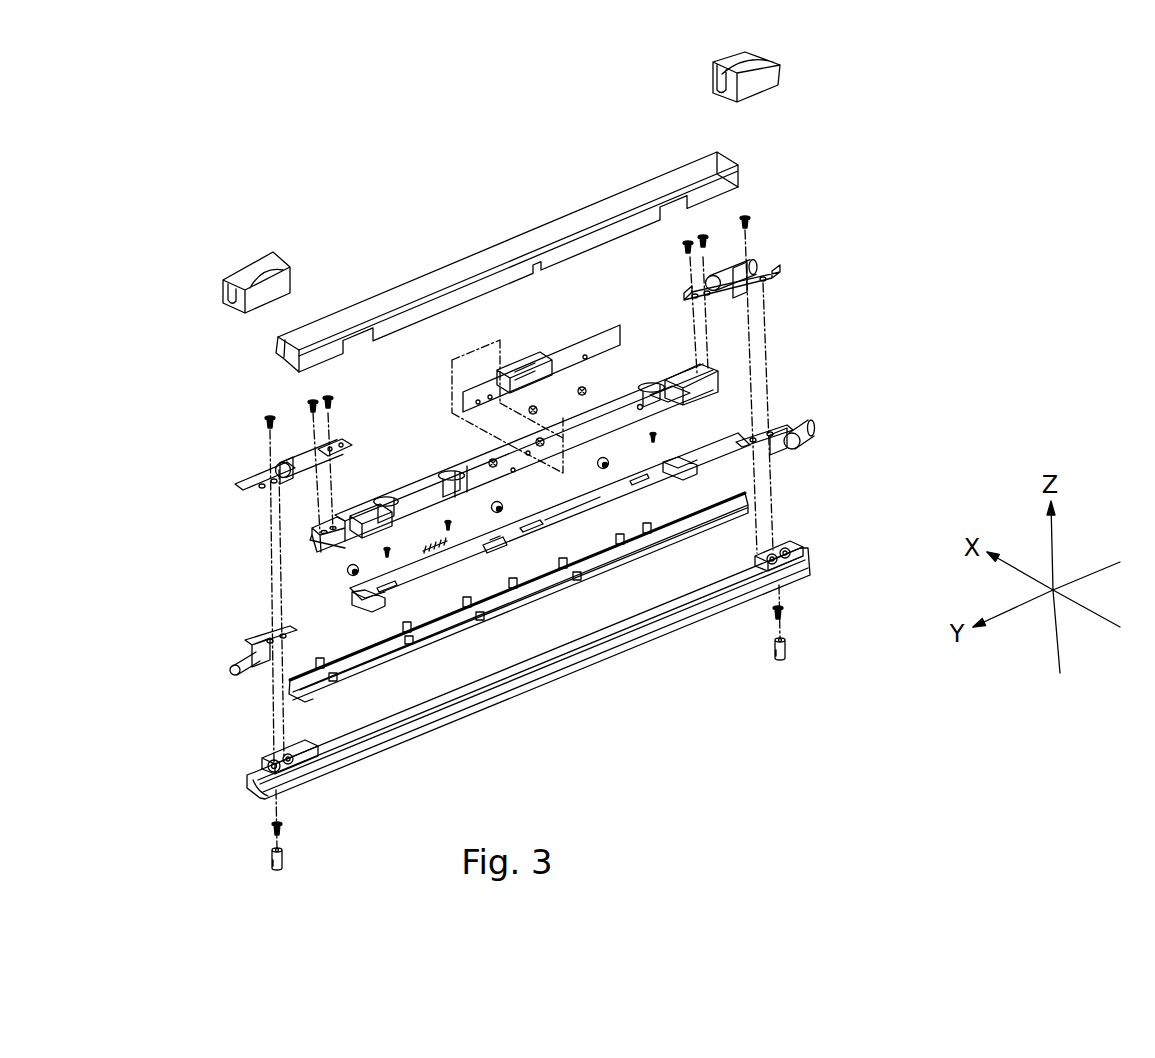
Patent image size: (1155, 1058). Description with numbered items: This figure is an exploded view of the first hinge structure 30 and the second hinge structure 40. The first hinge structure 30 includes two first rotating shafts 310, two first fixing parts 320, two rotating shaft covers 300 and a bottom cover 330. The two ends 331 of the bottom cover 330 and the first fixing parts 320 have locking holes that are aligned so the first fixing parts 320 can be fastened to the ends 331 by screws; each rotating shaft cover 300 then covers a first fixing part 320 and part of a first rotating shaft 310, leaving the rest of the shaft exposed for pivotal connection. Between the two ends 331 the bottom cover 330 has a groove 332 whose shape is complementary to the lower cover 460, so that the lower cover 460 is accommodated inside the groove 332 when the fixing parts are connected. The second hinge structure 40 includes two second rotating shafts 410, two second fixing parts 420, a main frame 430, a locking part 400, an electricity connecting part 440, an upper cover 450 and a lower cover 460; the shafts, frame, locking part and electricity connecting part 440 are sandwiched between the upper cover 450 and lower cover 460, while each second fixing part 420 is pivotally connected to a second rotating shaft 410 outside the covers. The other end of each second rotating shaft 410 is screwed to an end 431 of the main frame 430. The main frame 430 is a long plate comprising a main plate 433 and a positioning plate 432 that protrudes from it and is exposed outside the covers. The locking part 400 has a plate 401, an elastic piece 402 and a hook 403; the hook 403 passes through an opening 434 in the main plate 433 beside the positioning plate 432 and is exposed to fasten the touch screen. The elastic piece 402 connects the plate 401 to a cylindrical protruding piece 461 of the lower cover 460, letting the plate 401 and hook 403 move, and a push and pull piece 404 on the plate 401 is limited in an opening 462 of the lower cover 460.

The first hinge structure 30 is at (225, 753).
The second hinge structure 40 is at (838, 346).
The rotating shaft cover 300 is at (242, 277).
The first rotating shaft 310 is at (232, 660).
The first fixing part 320 is at (253, 639).
The bottom cover 330 is at (549, 685).
The end 331 is at (290, 780).
The groove 332 is at (390, 724).
The locking part 400 is at (463, 514).
The plate 401 is at (568, 510).
The elastic piece 402 is at (432, 553).
The hook 403 is at (355, 600).
The push and pull piece 404 is at (507, 550).
The second rotating shaft 410 is at (300, 460).
The second fixing part 420 is at (262, 490).
The main frame 430 is at (505, 432).
The end 431 is at (313, 538).
The positioning plate 432 is at (370, 520).
The main plate 433 is at (425, 481).
The opening 434 is at (317, 537).
The electricity connecting part 440 is at (543, 372).
The upper cover 450 is at (503, 245).
The lower cover 460 is at (518, 597).
The protruding piece 461 is at (427, 623).
The opening 462 is at (497, 610).